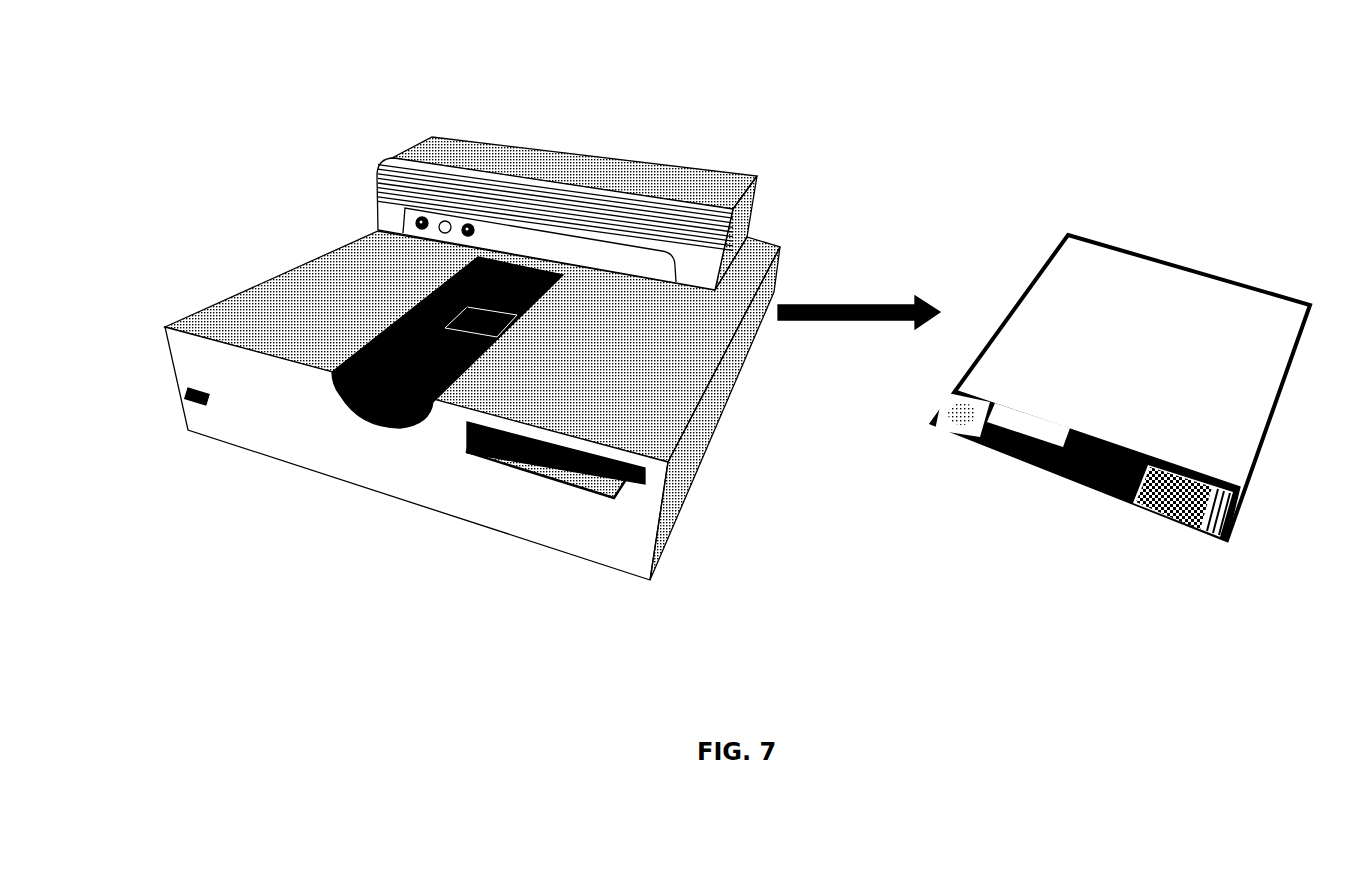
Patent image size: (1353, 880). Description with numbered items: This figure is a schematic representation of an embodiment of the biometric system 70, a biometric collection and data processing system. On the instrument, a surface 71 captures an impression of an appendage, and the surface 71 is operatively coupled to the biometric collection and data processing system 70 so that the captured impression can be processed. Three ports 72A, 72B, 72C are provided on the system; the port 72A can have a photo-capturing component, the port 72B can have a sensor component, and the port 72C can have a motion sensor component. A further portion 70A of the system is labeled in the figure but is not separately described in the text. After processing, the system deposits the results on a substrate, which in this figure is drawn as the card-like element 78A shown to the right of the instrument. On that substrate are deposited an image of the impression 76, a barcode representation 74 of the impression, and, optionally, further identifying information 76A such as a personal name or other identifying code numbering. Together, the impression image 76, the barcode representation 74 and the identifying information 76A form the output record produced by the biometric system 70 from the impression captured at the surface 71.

The biometric system 70 is at (305, 107).
The card slot 70A is at (455, 428).
The surface 71 is at (470, 291).
The port 72A is at (472, 218).
The port 72B is at (447, 203).
The port 72C is at (416, 203).
The barcode representation 74 is at (1162, 520).
The image of the impression 76 is at (945, 435).
The further identifying information 76A is at (1000, 450).
The sample card 78A is at (1110, 235).